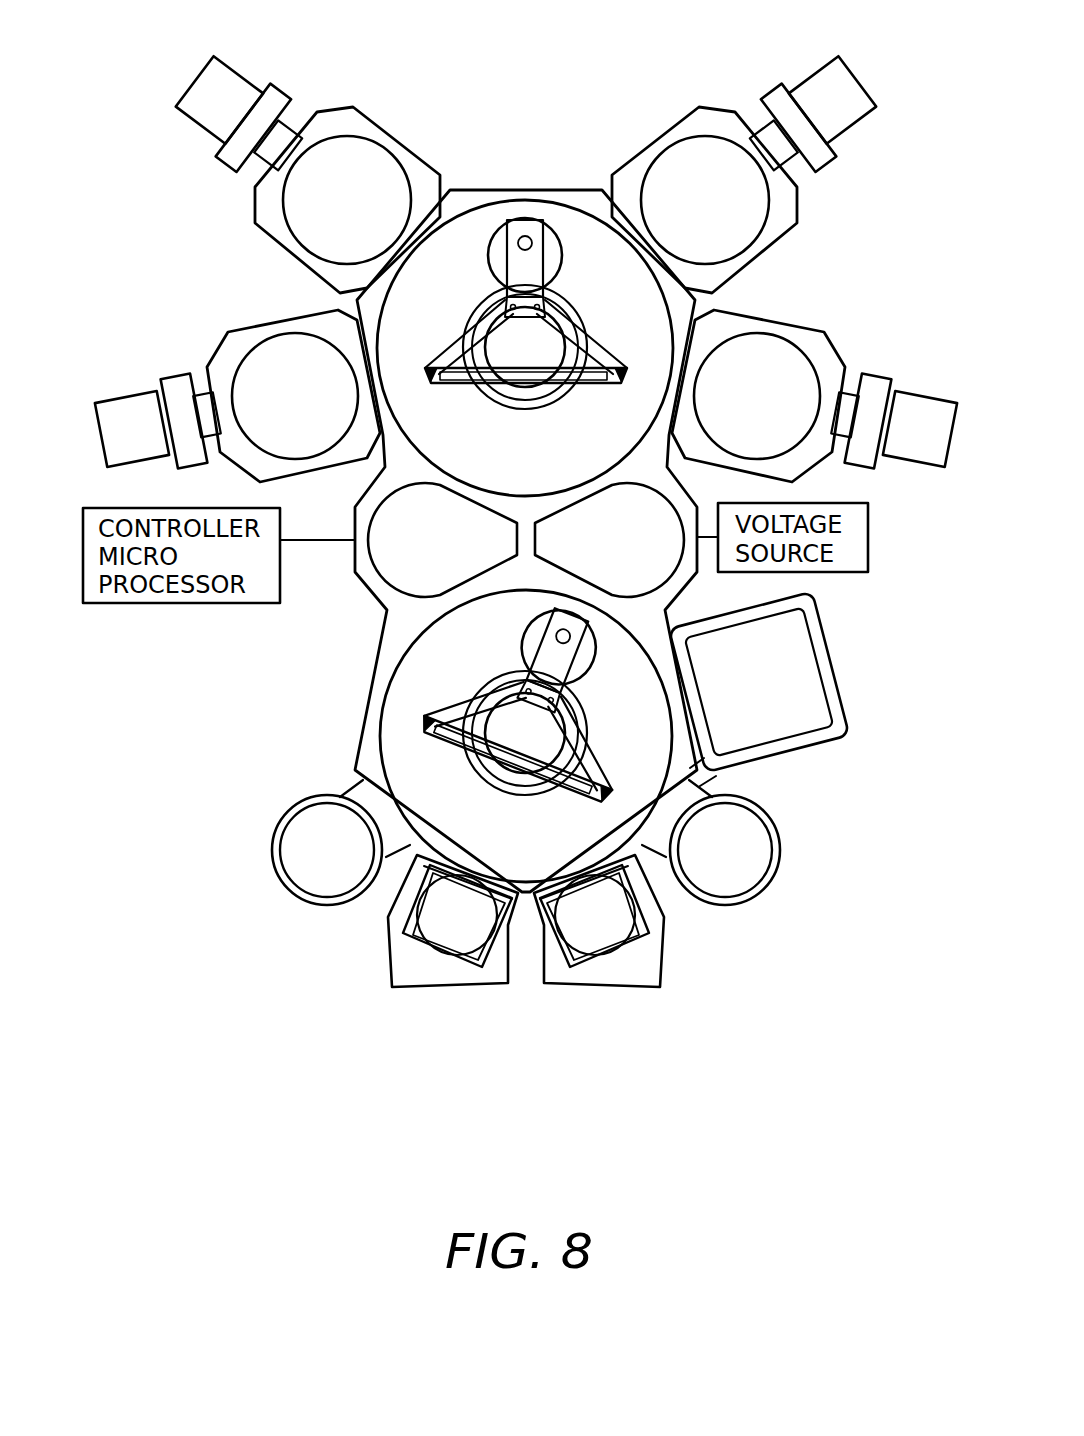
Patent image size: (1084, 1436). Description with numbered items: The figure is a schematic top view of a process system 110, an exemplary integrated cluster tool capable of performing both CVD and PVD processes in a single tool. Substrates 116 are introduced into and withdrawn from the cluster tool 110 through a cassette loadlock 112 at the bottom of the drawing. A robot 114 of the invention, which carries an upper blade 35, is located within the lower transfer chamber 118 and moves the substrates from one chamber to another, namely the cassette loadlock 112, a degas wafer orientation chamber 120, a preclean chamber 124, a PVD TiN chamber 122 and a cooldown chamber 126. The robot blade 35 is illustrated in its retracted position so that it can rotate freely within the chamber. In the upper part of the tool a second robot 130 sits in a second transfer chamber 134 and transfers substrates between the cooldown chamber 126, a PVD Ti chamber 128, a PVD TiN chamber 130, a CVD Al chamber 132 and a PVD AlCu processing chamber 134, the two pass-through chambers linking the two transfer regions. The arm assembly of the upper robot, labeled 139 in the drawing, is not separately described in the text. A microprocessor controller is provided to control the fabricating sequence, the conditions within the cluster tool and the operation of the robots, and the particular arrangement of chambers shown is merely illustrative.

The process system 110 is at (655, 46).
The cassette loadlock 112 is at (640, 967).
The robot 114 is at (517, 753).
The substrates 116 is at (598, 652).
The transfer chamber 118 is at (654, 756).
The degas wafer orientation chamber 120 is at (303, 855).
The PVD TiN chamber 122 is at (793, 668).
The preclean chamber 124 is at (650, 552).
The cooldown chamber 126 is at (372, 523).
The PVD Ti chamber 128 is at (273, 328).
The second robot 130 is at (387, 140).
The CVD Al chamber 132 is at (667, 140).
The transfer chamber 134 is at (777, 327).
The robot arm assembly 139 is at (633, 302).
The upper blade 35 is at (520, 678).